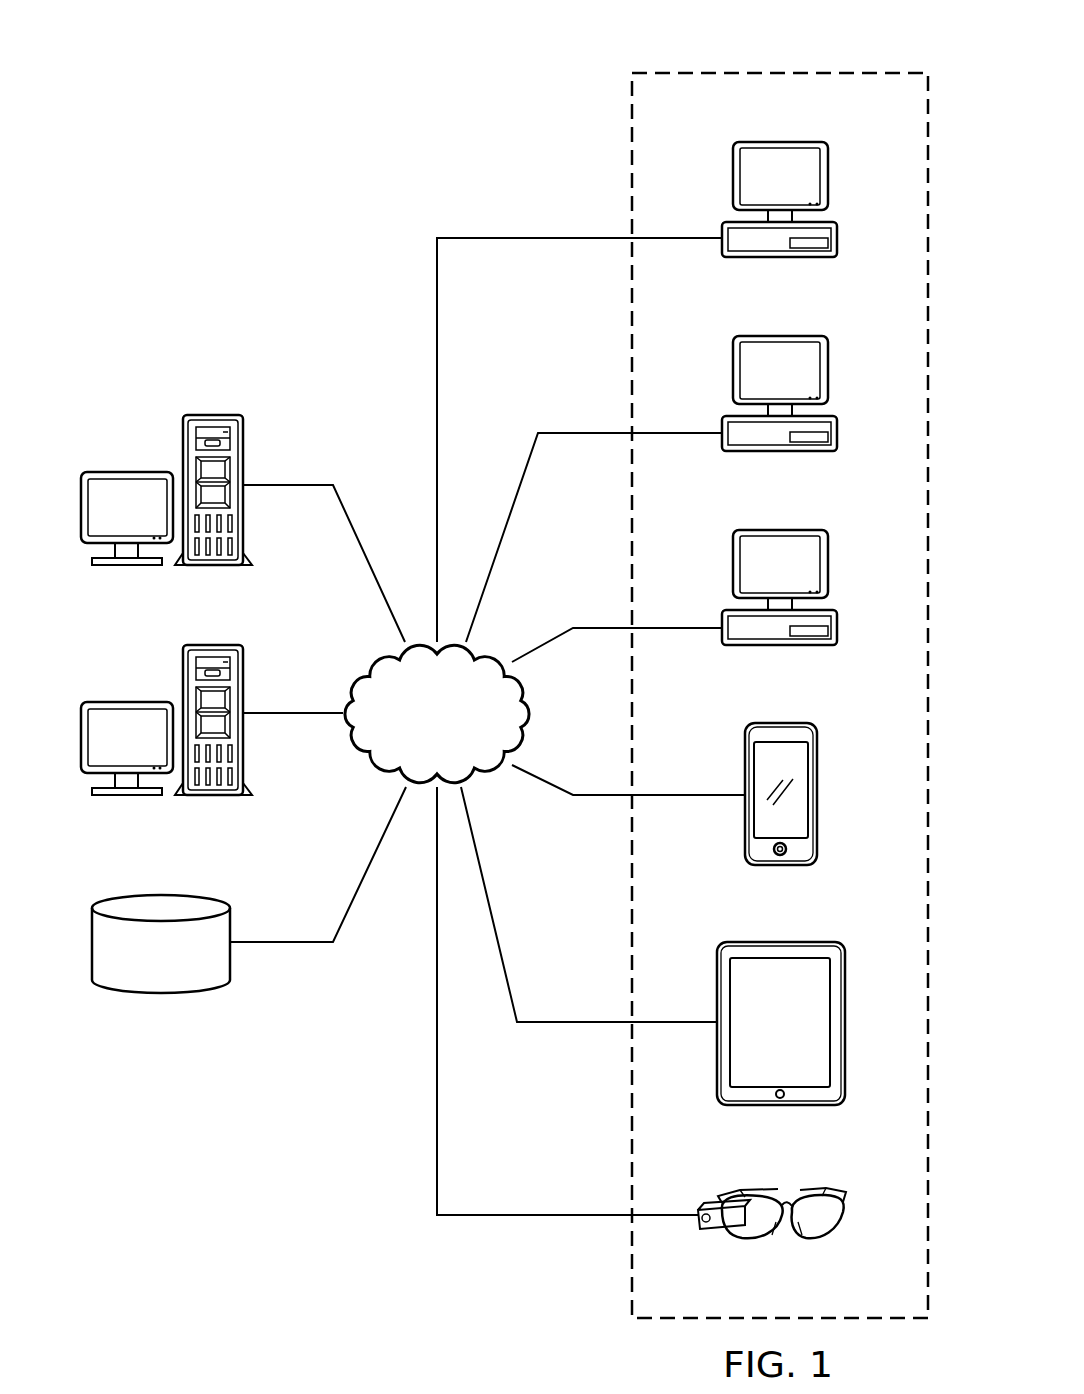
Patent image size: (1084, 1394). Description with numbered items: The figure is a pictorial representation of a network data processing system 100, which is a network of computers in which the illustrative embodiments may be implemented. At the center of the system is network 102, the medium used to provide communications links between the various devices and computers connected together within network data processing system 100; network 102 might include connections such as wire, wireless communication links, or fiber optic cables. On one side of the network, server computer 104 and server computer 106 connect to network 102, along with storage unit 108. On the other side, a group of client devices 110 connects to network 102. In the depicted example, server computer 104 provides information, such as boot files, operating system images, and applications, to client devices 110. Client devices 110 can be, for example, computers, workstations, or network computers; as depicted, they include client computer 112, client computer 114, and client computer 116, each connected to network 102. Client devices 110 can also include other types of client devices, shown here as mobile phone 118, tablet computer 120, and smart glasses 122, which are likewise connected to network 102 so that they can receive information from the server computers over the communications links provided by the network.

The network data processing system 100 is at (332, 84).
The network 102 is at (460, 747).
The server computer 104 is at (128, 471).
The server computer 106 is at (128, 701).
The storage unit 108 is at (160, 992).
The client devices 110 is at (835, 73).
The client computer 112 is at (828, 175).
The client computer 114 is at (828, 369).
The client computer 116 is at (828, 563).
The mobile phone 118 is at (817, 805).
The tablet computer 120 is at (802, 1038).
The smart glasses 122 is at (838, 1224).